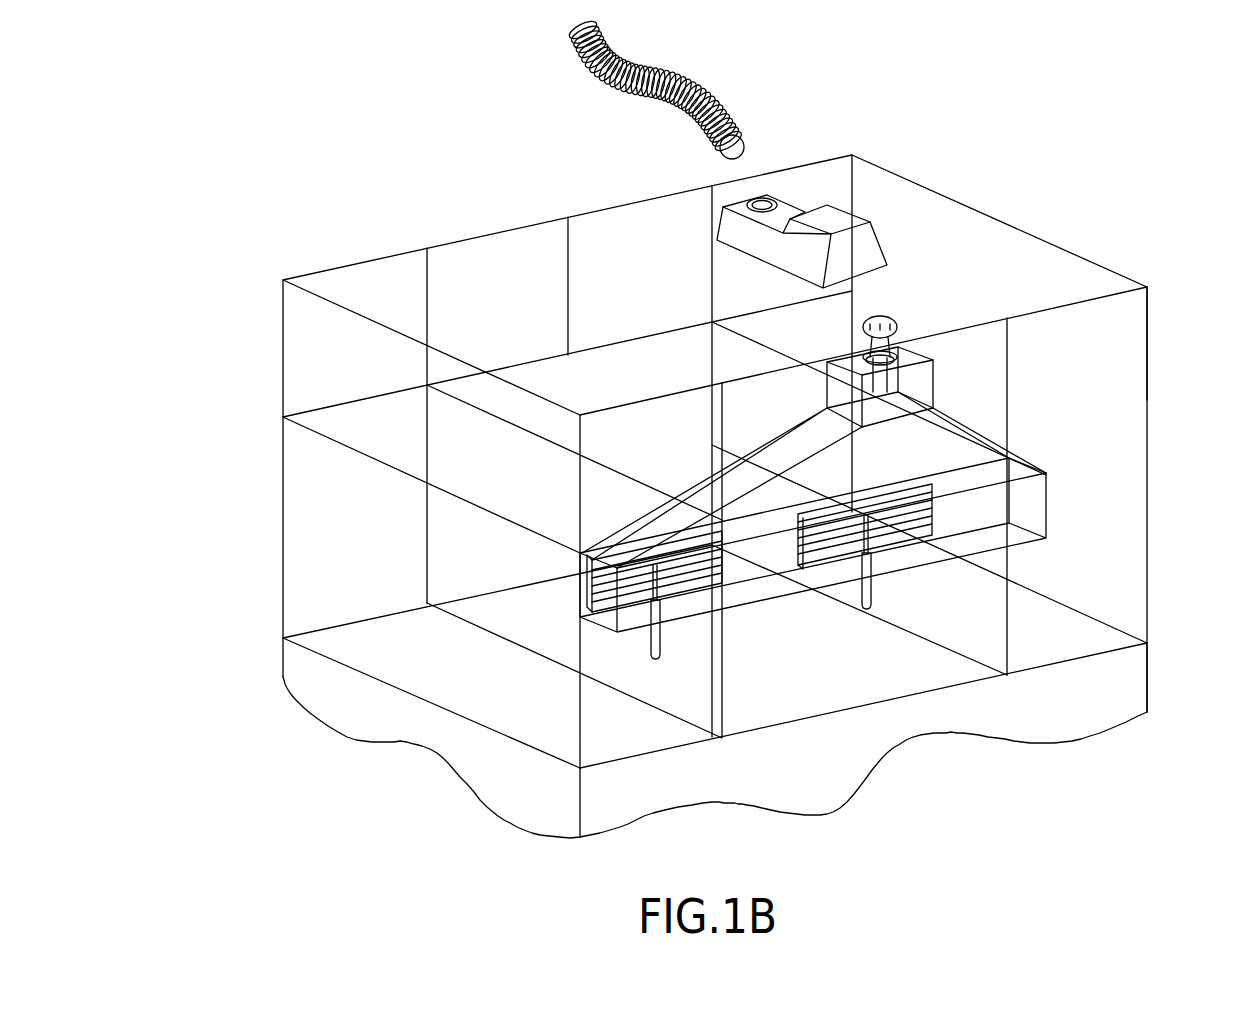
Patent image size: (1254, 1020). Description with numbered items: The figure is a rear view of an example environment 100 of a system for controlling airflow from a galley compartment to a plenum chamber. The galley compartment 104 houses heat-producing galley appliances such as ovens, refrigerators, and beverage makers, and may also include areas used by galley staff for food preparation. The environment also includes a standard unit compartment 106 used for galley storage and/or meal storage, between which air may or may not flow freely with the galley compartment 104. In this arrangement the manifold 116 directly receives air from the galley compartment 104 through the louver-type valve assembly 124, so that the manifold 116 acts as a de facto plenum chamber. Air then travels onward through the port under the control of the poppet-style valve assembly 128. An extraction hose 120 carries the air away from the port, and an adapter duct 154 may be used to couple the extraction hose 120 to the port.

The example environment 100 is at (276, 121).
The galley compartment 104 is at (965, 607).
The standard unit compartment 106 is at (1127, 345).
The manifold 116 is at (965, 455).
The extraction hose 120 is at (675, 82).
The louver-type valve assembly 124 is at (690, 630).
The poppet-style valve assembly 128 is at (880, 315).
The adapter duct 154 is at (835, 222).